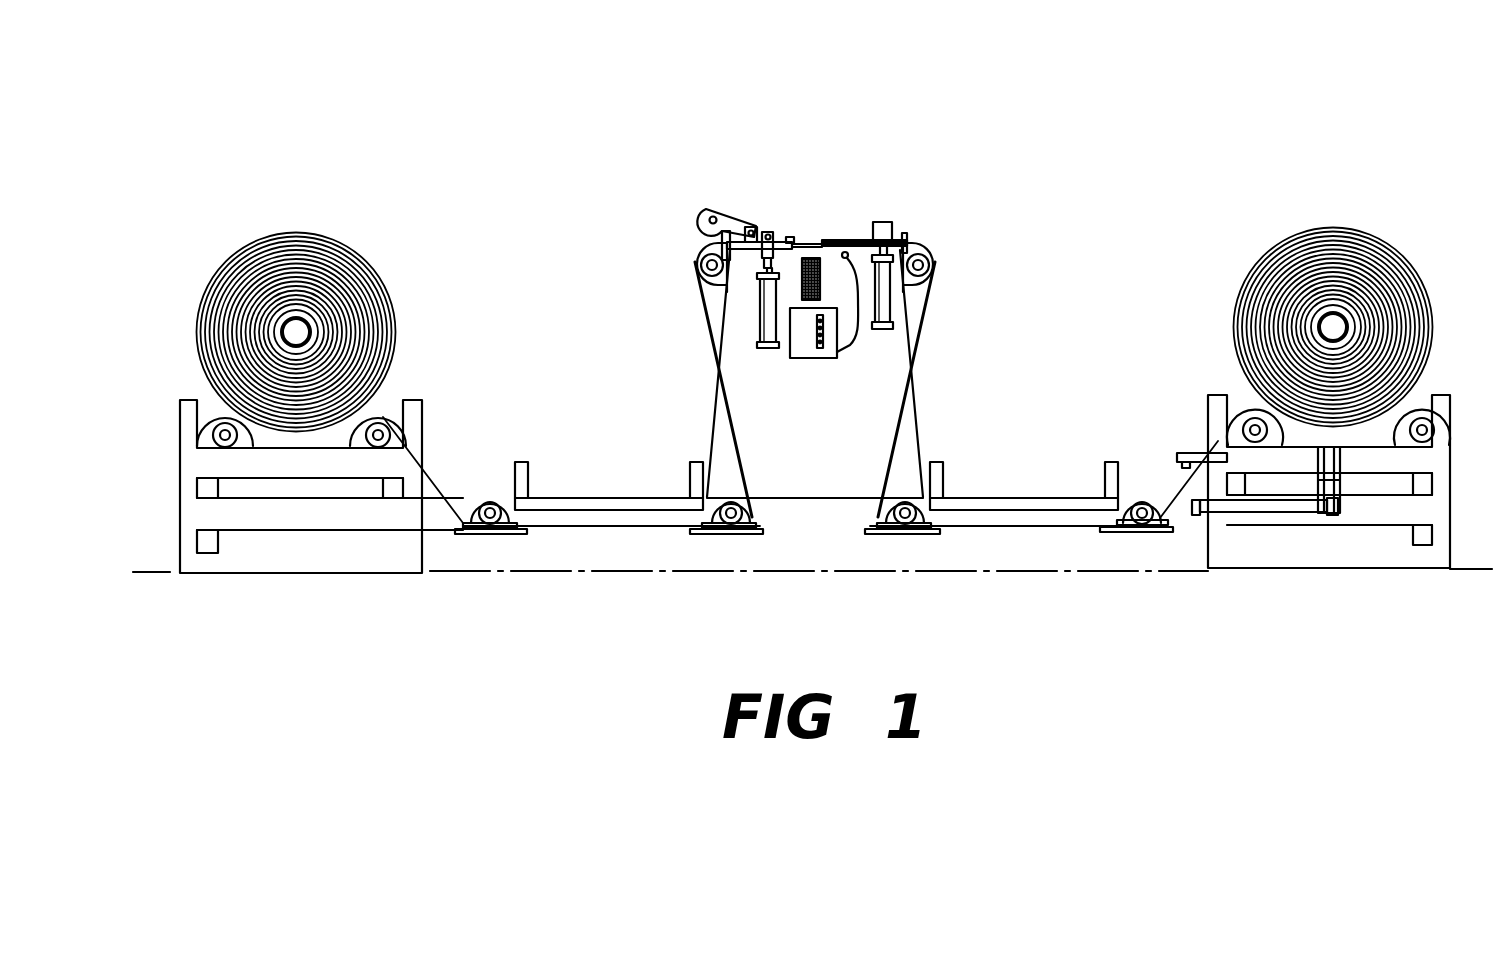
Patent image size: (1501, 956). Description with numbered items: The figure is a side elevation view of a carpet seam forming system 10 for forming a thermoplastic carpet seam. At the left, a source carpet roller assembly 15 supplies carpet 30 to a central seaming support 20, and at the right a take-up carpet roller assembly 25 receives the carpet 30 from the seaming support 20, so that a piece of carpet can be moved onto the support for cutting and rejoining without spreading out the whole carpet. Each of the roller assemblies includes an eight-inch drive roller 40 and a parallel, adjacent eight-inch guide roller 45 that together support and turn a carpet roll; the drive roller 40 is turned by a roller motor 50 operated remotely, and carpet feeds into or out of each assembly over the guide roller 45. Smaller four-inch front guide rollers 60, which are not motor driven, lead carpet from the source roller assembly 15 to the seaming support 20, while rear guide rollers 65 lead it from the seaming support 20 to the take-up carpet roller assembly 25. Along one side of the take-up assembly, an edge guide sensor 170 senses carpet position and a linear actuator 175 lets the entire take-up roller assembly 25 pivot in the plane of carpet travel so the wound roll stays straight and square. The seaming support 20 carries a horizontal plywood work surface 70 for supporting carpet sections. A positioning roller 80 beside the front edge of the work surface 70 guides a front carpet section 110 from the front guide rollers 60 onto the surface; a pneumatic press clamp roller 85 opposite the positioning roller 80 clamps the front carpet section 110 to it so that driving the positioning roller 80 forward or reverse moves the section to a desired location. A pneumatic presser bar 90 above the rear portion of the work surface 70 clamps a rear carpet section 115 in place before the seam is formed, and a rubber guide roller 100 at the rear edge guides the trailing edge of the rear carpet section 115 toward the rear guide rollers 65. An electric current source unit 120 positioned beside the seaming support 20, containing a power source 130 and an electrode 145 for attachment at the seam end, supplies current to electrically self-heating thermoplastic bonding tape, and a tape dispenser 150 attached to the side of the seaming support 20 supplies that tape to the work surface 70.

The carpet seam forming system 10 is at (563, 107).
The source carpet roller assembly 15 is at (297, 577).
The seaming support 20 is at (853, 462).
The take-up carpet roller assembly 25 is at (1362, 569).
The carpet 30 is at (437, 453).
The drive roller 40 is at (218, 417).
The guide roller 45 is at (383, 417).
The roller motor 50 is at (213, 440).
The front guide roller 60 is at (480, 500).
The rear guide roller 65 is at (923, 492).
The work surface 70 is at (810, 242).
The positioning roller 80 is at (700, 248).
The pneumatic press clamp roller 85 is at (715, 210).
The pneumatic presser bar 90 is at (885, 223).
The rubber guide roller 100 is at (930, 250).
The front carpet section 110 is at (792, 237).
The rear carpet section 115 is at (835, 241).
The electric current source unit 120 is at (805, 358).
The power source 130 is at (820, 358).
The electrode 145 is at (850, 347).
The tape dispenser 150 is at (802, 283).
The edge guide sensor 170 is at (1188, 450).
The linear actuator 175 is at (1250, 508).